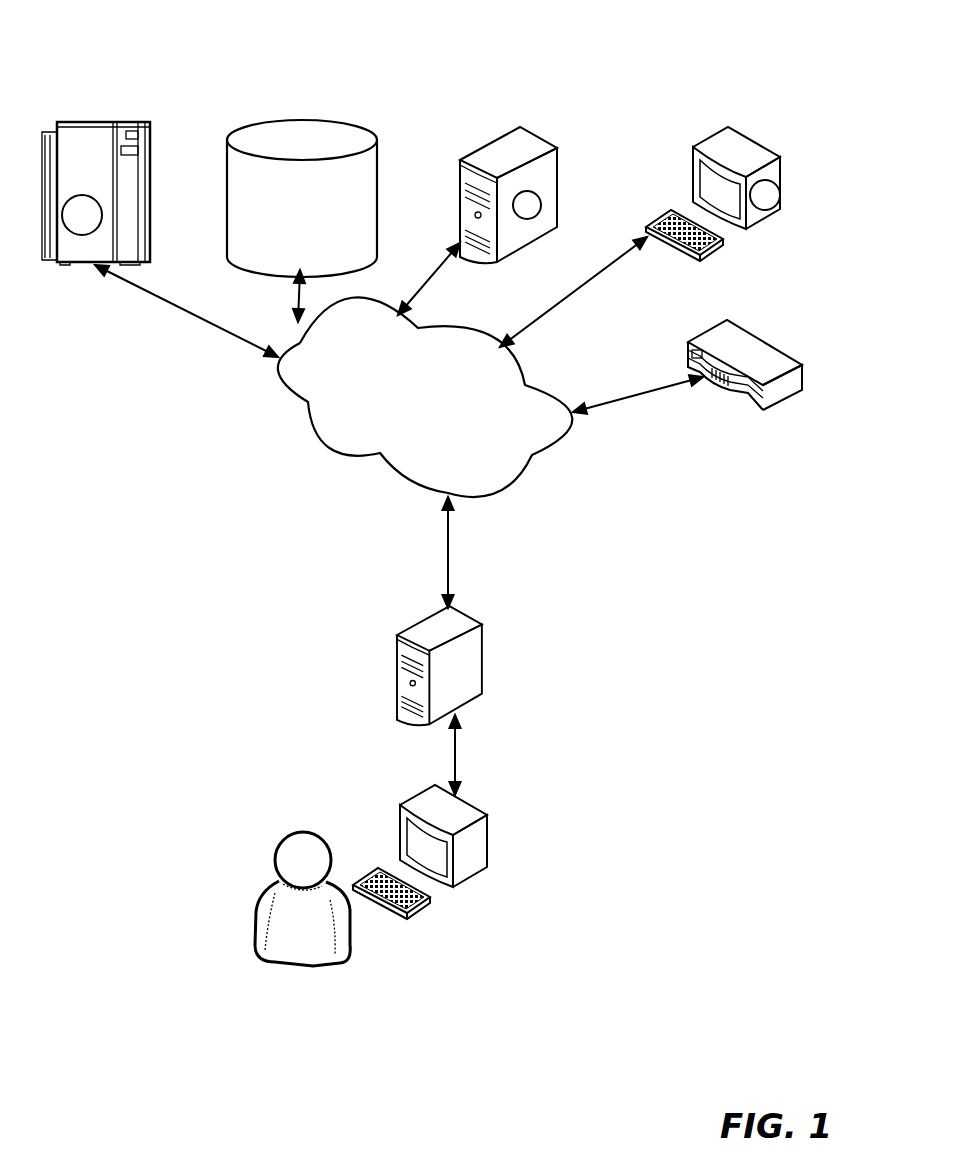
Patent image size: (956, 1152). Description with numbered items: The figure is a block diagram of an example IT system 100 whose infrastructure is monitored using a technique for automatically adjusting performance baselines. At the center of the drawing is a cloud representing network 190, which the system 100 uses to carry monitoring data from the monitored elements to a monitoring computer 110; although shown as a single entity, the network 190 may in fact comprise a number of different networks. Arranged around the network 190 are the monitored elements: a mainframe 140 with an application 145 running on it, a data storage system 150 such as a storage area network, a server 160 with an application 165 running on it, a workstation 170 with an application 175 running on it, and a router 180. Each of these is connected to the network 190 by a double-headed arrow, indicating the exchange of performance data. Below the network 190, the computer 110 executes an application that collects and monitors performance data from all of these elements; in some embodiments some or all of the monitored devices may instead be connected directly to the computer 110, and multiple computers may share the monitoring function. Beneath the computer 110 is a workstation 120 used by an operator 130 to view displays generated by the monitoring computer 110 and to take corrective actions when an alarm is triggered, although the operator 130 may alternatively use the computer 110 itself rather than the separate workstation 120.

The IT system 100 is at (601, 80).
The computer 110 is at (482, 655).
The workstation 120 is at (487, 847).
The operator 130 is at (253, 917).
The mainframe 140 is at (92, 123).
The application 145 is at (82, 235).
The data storage system 150 is at (302, 120).
The server 160 is at (553, 148).
The application 165 is at (533, 190).
The workstation 170 is at (740, 135).
The application 175 is at (765, 178).
The router 180 is at (748, 332).
The network 190 is at (530, 473).